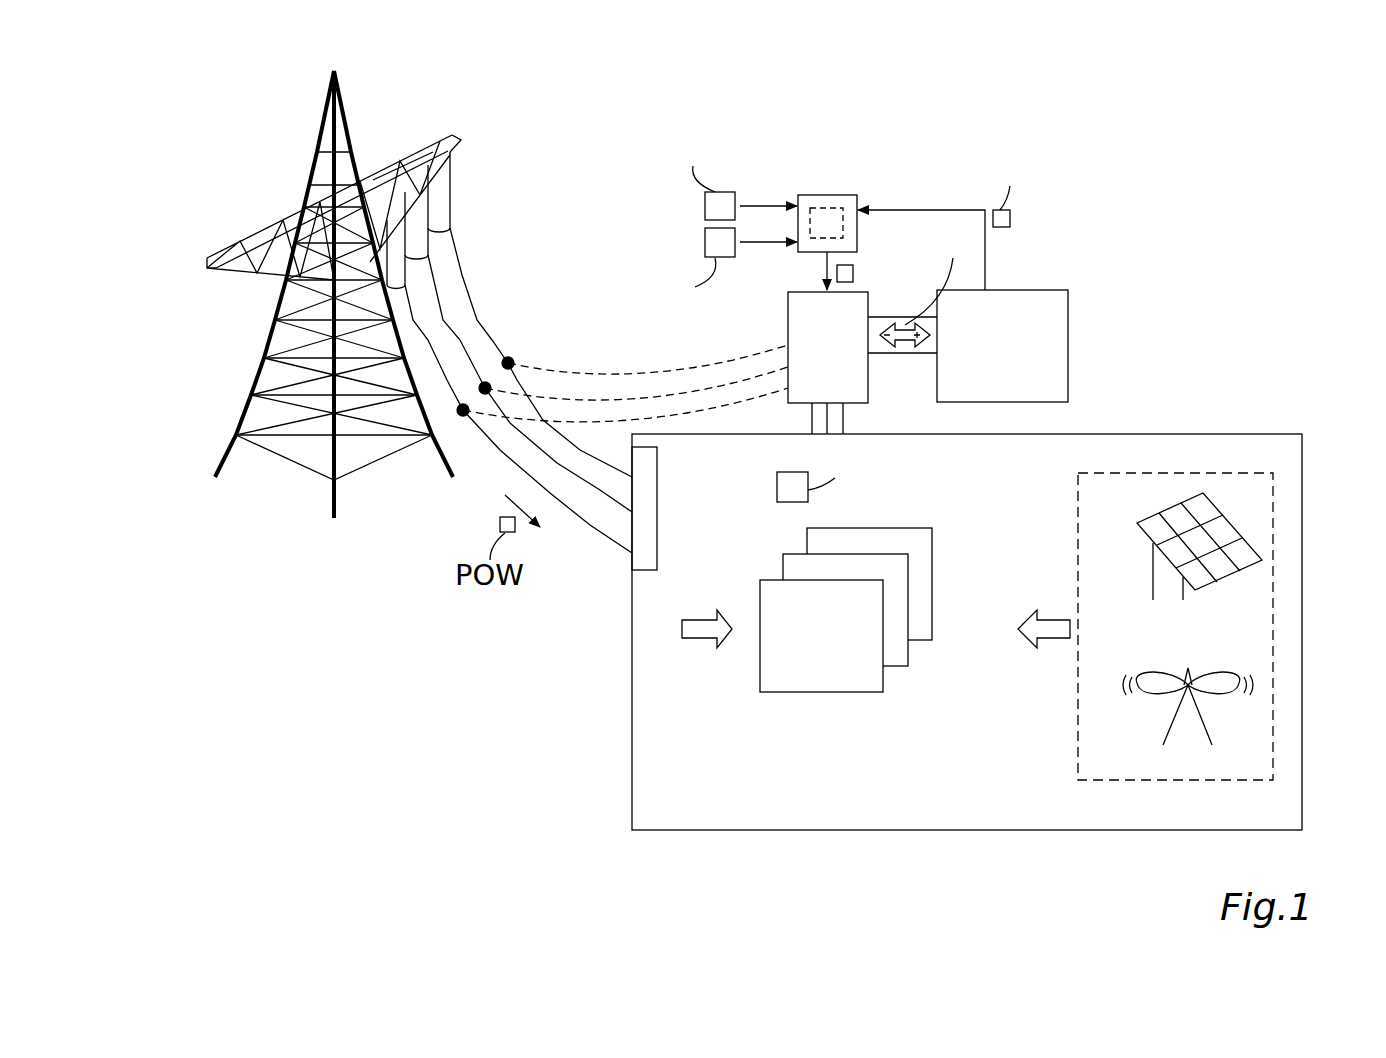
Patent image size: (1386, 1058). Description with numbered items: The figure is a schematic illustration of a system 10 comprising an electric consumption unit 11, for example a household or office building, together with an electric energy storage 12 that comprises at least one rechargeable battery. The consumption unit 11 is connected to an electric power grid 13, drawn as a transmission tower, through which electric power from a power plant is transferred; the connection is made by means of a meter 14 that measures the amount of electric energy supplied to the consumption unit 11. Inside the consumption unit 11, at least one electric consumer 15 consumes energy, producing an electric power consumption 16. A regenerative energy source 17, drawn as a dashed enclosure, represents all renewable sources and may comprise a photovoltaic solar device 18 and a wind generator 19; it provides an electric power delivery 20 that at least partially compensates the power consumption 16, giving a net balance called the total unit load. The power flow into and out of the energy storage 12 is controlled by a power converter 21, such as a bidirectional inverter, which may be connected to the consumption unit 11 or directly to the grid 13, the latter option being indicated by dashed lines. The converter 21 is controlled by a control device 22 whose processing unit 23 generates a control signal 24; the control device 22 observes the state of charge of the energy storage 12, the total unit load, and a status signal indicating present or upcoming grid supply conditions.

The system 10 is at (971, 434).
The electric consumption unit 11 is at (1248, 434).
The energy storage 12 is at (1040, 290).
The power grid 13 is at (433, 117).
The meter 14 is at (642, 571).
The electric consumer 15 is at (838, 692).
The power consumption 16 is at (705, 619).
The regenerative energy source 17 is at (1273, 490).
The photovoltaic solar device 18 is at (1235, 528).
The wind generator 19 is at (1207, 725).
The power delivery 20 is at (1053, 619).
The power converter 21 is at (868, 388).
The control device 22 is at (845, 195).
The processing unit 23 is at (822, 208).
The control signal 24 is at (855, 272).